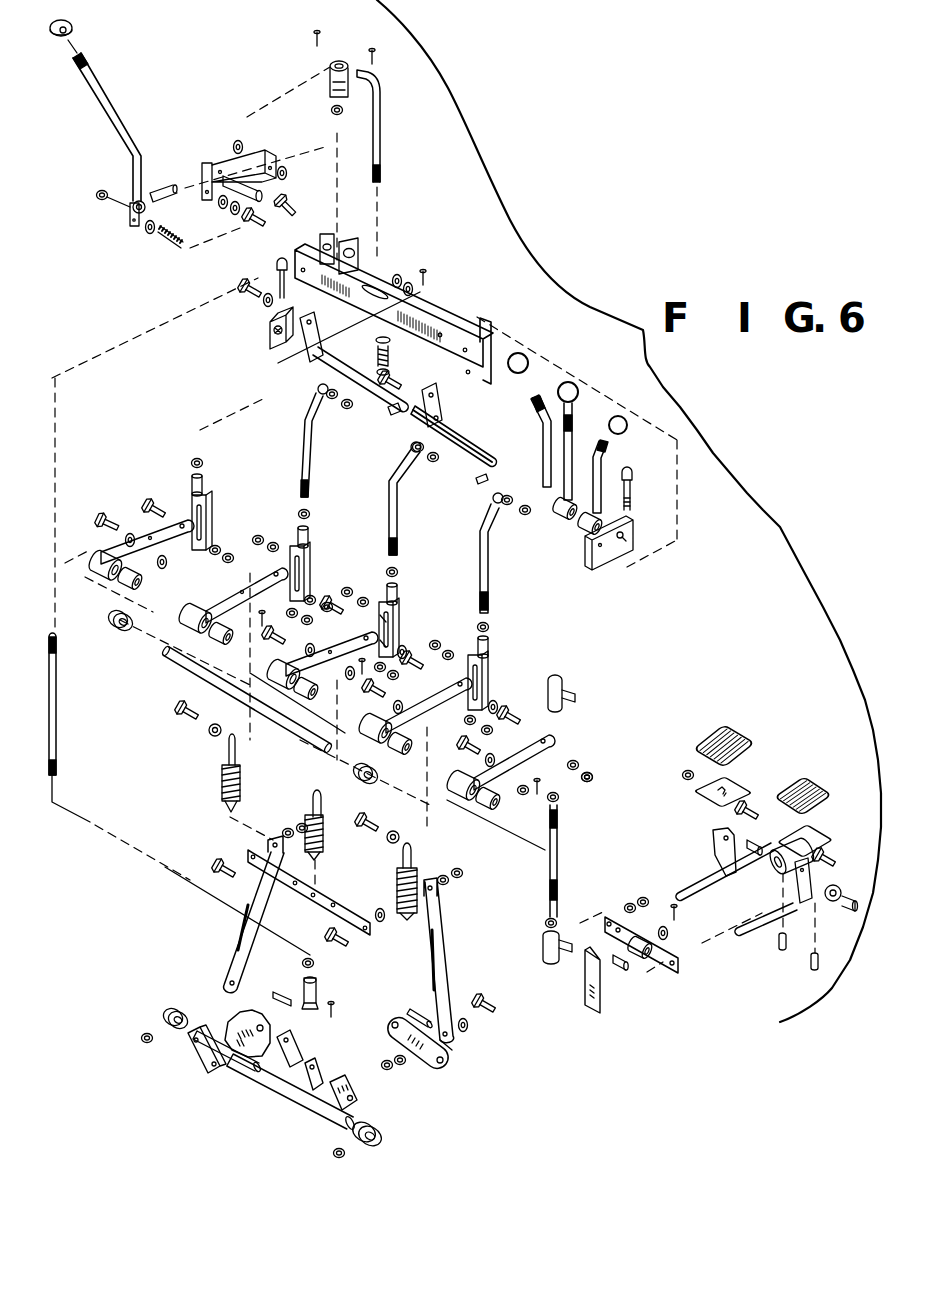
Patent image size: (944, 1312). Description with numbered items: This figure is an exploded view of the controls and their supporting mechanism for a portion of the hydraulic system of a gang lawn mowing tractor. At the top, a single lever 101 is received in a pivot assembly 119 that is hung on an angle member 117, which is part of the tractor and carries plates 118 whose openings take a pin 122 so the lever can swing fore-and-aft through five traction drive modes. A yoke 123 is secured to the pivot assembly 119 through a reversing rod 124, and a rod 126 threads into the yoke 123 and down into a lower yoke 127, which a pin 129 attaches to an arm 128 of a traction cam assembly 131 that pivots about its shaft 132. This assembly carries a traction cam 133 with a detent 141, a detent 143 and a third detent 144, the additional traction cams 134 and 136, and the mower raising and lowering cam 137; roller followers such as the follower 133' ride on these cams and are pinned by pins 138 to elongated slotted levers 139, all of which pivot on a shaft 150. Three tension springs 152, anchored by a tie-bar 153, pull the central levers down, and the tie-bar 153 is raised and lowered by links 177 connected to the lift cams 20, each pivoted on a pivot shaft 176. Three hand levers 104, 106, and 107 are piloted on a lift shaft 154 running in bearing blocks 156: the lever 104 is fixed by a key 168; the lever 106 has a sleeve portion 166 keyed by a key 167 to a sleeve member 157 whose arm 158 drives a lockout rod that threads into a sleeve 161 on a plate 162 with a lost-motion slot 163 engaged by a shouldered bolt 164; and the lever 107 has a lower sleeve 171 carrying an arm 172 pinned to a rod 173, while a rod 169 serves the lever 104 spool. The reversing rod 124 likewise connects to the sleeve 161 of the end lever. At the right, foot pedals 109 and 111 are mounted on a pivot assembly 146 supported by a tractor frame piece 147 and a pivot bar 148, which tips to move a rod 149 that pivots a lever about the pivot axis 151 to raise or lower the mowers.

The single lever 101 is at (118, 107).
The pivot assembly 119 is at (207, 160).
The pin 122 is at (263, 187).
The yoke 123 is at (338, 63).
The reversing rod 124 is at (383, 100).
The plates 118 is at (338, 233).
The angle member 117 is at (453, 327).
The bearing blocks 156 is at (272, 342).
The lift shaft 154 is at (360, 372).
The key 168 is at (397, 415).
The arm 158 is at (450, 401).
The hand lever 107 is at (533, 403).
The arm 172 is at (535, 440).
The sleeve member 157 is at (453, 450).
The key 167 is at (480, 485).
The hand lever 106 is at (578, 437).
The hand lever 104 is at (603, 467).
The lower sleeve 171 is at (525, 522).
The sleeve portion 166 is at (555, 520).
The rod 173 is at (487, 573).
The sleeve 161 is at (210, 471).
The plate 162 is at (400, 615).
The lost-motion slot 163 is at (395, 628).
The shouldered bolt 164 is at (424, 672).
The rod 169 is at (295, 457).
The pins 138 is at (107, 530).
The cam follower 133' is at (143, 549).
The slotted lever 139 is at (180, 538).
The traction cam 134 is at (262, 625).
The shaft 150 is at (173, 670).
The rod 126 is at (60, 693).
The traction cam 136 is at (333, 1068).
The pivot axis 151 is at (511, 784).
The mower raising and lowering cam 137 is at (527, 810).
The rod 149 is at (562, 860).
The tension springs 152 is at (242, 790).
The tie-bar 153 is at (320, 888).
The link 177 is at (263, 910).
The third detent 144 is at (222, 1010).
The traction cam 133 is at (206, 1013).
The arm 128 is at (218, 1070).
The detent 143 is at (253, 1070).
The detent 141 is at (268, 985).
The pin 129 is at (287, 993).
The yoke 127 is at (320, 985).
The pivot shaft 176 is at (413, 1010).
The shaft 132 is at (357, 1097).
The traction cam assembly 131 is at (306, 1115).
The cam 20 is at (445, 1057).
The foot pedal 109 is at (740, 722).
The foot pedal 111 is at (820, 785).
The pivot assembly 146 is at (773, 867).
The pivot bar 148 is at (677, 970).
The tractor frame piece 147 is at (600, 995).